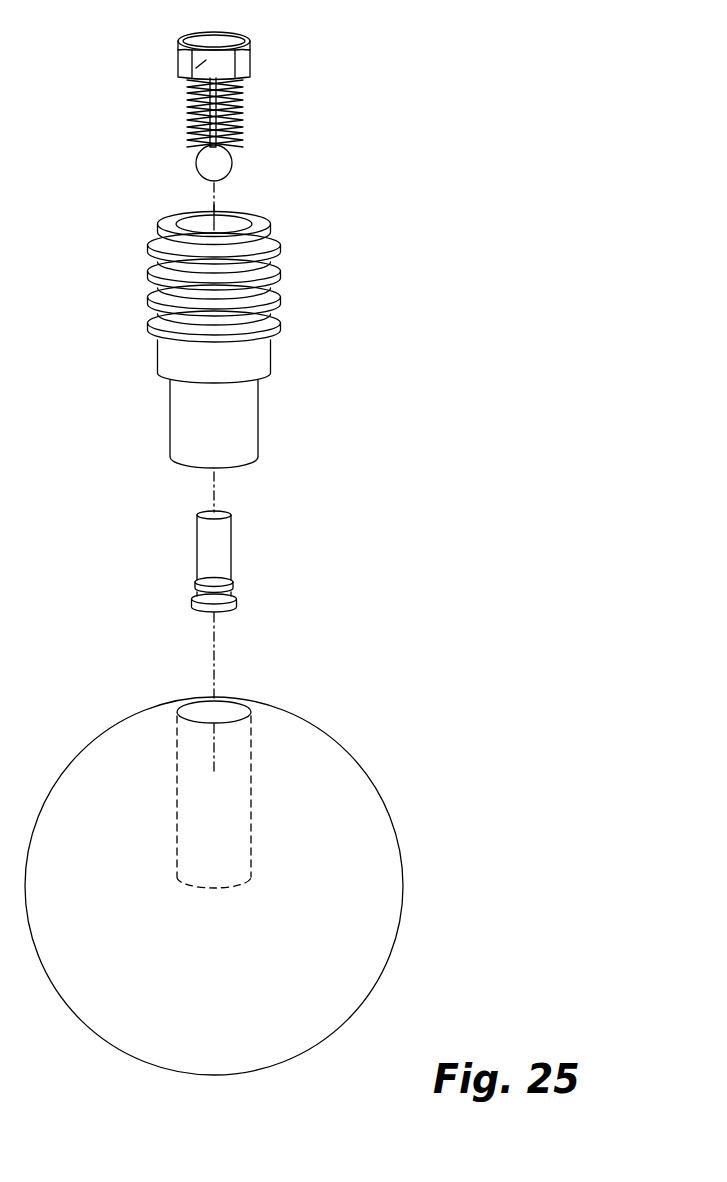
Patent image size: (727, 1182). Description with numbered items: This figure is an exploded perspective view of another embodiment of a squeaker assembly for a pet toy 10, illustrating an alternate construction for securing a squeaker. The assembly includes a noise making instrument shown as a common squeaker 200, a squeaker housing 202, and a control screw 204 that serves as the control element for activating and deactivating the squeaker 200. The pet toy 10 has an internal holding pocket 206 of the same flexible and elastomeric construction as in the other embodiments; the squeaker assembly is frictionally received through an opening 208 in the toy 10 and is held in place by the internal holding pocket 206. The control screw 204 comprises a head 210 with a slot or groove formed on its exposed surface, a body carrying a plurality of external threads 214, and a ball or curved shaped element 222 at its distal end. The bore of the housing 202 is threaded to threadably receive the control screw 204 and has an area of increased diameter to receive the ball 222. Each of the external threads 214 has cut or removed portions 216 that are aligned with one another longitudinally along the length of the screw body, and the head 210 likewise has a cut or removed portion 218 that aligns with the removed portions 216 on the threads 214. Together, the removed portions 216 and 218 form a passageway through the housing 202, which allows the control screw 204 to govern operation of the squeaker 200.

The pet toy 10 is at (443, 833).
The squeaker 200 is at (289, 545).
The squeaker housing 202 is at (322, 326).
The control screw 204 is at (280, 100).
The internal holding pocket 206 is at (177, 808).
The opening 208 is at (237, 710).
The head 210 is at (227, 35).
The external threads 214 is at (243, 133).
The cut or removed portions 216 is at (207, 125).
The cut or removed portion 218 is at (202, 63).
The ball 222 is at (228, 165).